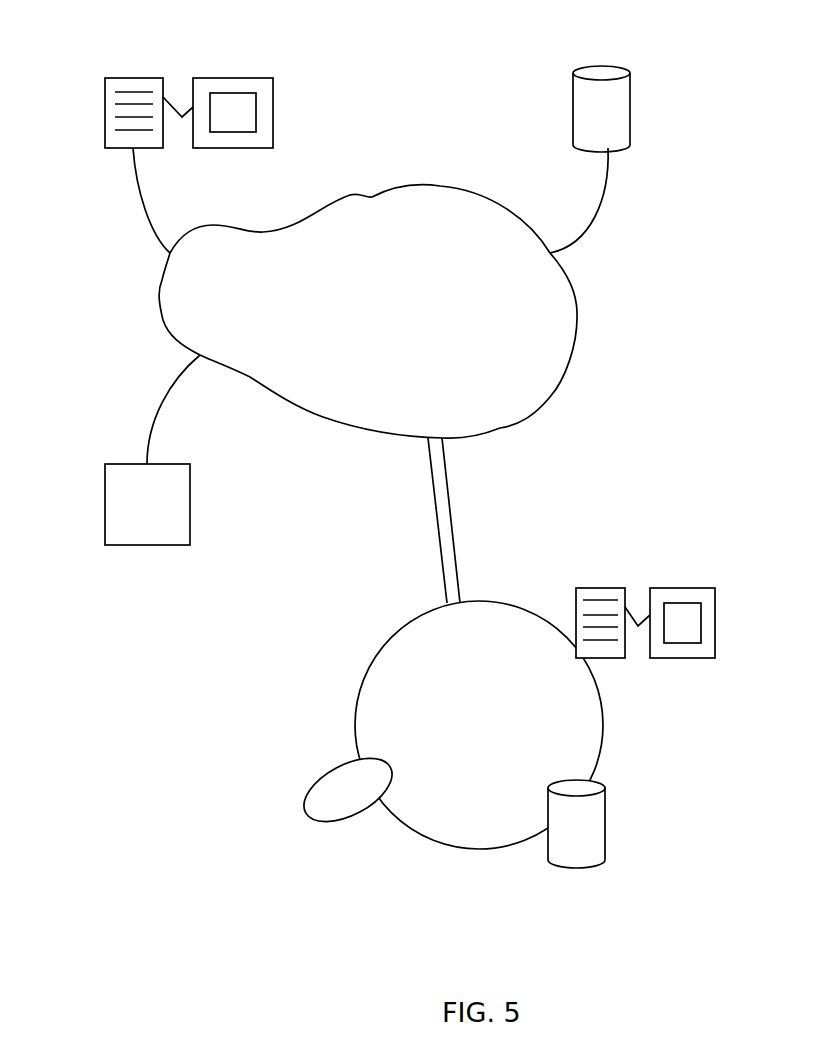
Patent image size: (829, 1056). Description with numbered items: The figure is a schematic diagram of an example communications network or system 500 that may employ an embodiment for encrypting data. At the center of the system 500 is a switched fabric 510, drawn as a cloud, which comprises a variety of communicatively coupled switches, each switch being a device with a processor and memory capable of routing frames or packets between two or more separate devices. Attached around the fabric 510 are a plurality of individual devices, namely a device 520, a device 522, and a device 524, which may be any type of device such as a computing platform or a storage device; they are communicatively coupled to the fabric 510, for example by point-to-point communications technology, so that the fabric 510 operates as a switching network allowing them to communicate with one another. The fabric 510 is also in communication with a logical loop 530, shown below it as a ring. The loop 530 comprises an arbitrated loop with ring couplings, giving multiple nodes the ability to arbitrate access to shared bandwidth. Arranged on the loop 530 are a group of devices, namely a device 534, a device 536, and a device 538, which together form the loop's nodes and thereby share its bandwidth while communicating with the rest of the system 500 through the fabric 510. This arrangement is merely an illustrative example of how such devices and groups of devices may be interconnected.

The communications network or system 500 is at (198, 963).
The switched fabric 510 is at (368, 311).
The device 520 is at (135, 78).
The device 522 is at (147, 545).
The device 524 is at (630, 110).
The logical loop 530 is at (366, 662).
The device 534 is at (320, 822).
The device 536 is at (573, 862).
The device 538 is at (599, 588).